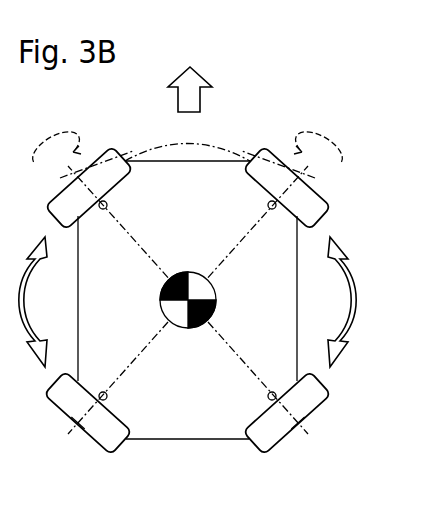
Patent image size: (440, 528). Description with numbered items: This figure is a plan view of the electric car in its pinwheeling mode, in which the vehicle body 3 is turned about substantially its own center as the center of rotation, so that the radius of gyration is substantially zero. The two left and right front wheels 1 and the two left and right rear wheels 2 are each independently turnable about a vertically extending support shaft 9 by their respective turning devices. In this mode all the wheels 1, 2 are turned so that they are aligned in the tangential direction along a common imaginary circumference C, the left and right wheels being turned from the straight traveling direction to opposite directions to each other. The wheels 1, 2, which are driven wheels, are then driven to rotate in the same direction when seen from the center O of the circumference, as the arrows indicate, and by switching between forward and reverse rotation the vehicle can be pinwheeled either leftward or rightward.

The wheel (front wheel) 1 is at (50, 197).
The wheel (rear wheel) 2 is at (53, 404).
The vehicle body 3 is at (78, 301).
The support shaft 9 is at (107, 207).
The common imaginary circumference C is at (210, 145).
The center of the circumference O is at (182, 314).